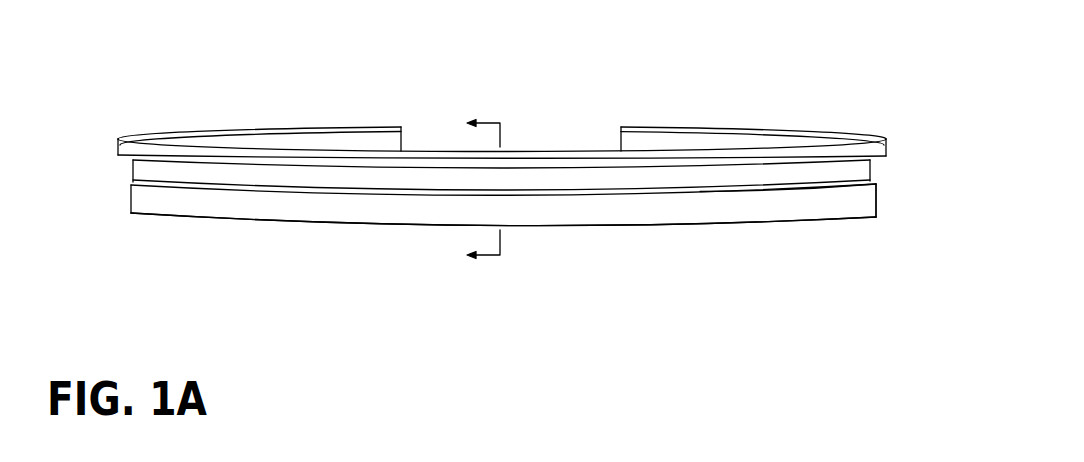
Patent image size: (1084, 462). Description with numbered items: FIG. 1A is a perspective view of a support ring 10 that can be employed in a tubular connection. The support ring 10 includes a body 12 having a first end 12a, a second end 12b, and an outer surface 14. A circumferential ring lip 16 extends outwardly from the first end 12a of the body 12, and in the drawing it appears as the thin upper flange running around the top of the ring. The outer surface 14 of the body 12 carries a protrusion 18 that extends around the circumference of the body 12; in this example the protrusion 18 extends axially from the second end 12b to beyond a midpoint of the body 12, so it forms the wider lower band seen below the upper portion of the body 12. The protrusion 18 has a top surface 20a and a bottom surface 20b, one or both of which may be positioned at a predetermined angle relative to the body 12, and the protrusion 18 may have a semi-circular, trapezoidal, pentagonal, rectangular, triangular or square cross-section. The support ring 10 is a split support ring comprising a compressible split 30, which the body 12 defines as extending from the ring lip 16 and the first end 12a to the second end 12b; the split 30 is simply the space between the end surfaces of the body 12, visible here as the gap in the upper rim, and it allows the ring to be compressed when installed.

The support ring 10 is at (153, 90).
The body 12 is at (146, 170).
The first end 12a is at (128, 161).
The second end 12b is at (130, 215).
The outer surface 14 is at (857, 168).
The circumferential ring lip 16 is at (888, 145).
The protrusion 18 is at (803, 207).
The top surface 20a is at (875, 178).
The bottom surface 20b is at (767, 222).
The compressible split 30 is at (568, 137).